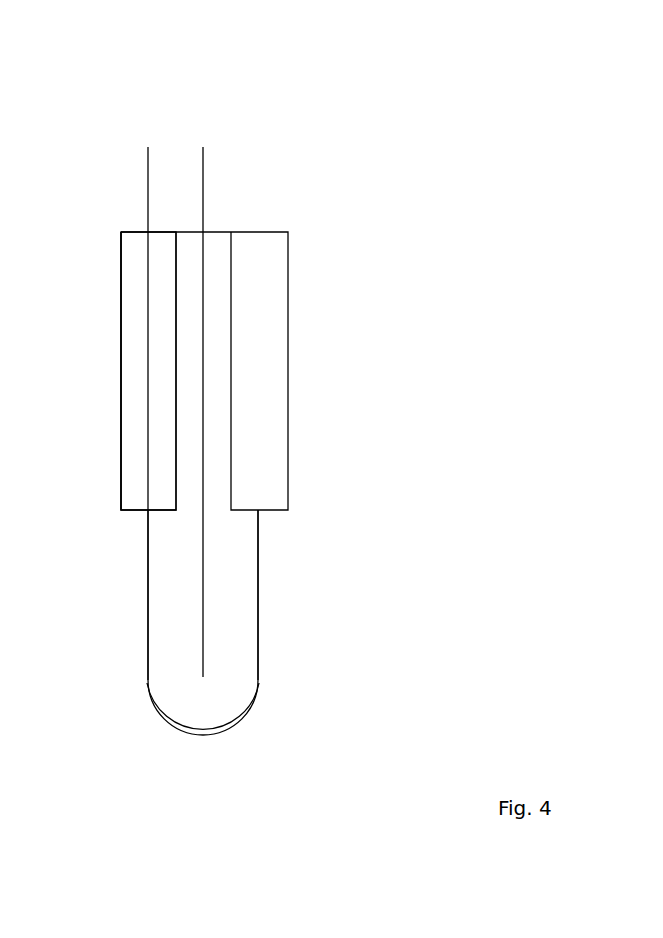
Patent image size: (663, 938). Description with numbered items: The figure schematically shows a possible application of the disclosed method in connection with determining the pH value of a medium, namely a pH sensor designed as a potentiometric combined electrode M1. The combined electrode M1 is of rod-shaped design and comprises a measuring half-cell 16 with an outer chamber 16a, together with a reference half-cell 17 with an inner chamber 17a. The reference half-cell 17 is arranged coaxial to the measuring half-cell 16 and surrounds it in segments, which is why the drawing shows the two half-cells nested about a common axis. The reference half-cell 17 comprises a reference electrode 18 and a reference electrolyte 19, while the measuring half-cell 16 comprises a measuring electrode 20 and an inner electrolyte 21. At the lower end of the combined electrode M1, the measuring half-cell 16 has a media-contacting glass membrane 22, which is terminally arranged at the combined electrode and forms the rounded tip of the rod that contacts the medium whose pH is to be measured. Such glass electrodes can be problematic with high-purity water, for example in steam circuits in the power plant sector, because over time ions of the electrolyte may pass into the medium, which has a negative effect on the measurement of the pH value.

The combined electrode of a pH sensor M1 is at (90, 98).
The measuring half-cell 16 is at (130, 621).
The outer chamber 16a is at (165, 580).
The reference half-cell 17 is at (107, 380).
The inner chamber 17a is at (135, 435).
The reference electrode 18 is at (135, 285).
The reference electrolyte 19 is at (148, 212).
The measuring electrode 20 is at (228, 578).
The inner electrolyte 21 is at (212, 645).
The glass membrane 22 is at (222, 730).